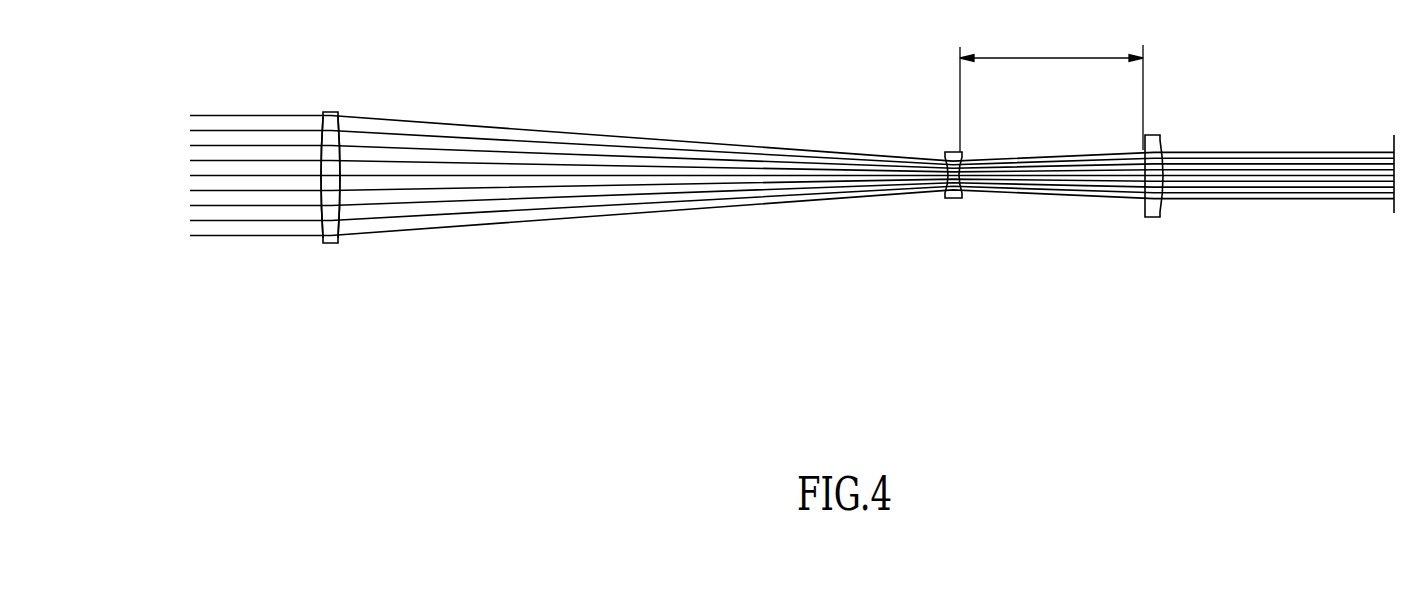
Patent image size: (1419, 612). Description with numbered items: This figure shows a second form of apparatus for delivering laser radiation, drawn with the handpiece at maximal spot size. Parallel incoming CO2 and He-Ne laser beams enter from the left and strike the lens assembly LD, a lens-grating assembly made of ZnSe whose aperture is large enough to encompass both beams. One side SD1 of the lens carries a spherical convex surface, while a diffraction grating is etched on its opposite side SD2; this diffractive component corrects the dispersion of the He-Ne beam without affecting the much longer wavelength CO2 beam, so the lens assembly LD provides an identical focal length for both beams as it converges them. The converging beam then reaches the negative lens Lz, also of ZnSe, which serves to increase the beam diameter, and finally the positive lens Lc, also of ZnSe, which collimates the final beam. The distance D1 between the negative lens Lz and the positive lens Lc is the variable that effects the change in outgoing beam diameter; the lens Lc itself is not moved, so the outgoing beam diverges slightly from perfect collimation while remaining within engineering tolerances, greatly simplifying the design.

The lens assembly LD is at (330, 243).
The spherical convex surface SD1 is at (318, 212).
The diffraction grating side SD2 is at (342, 215).
The negative lens Lz is at (953, 198).
The positive lens Lc is at (1152, 217).
The distance between negative lens and positive lens D1 is at (1051, 90).